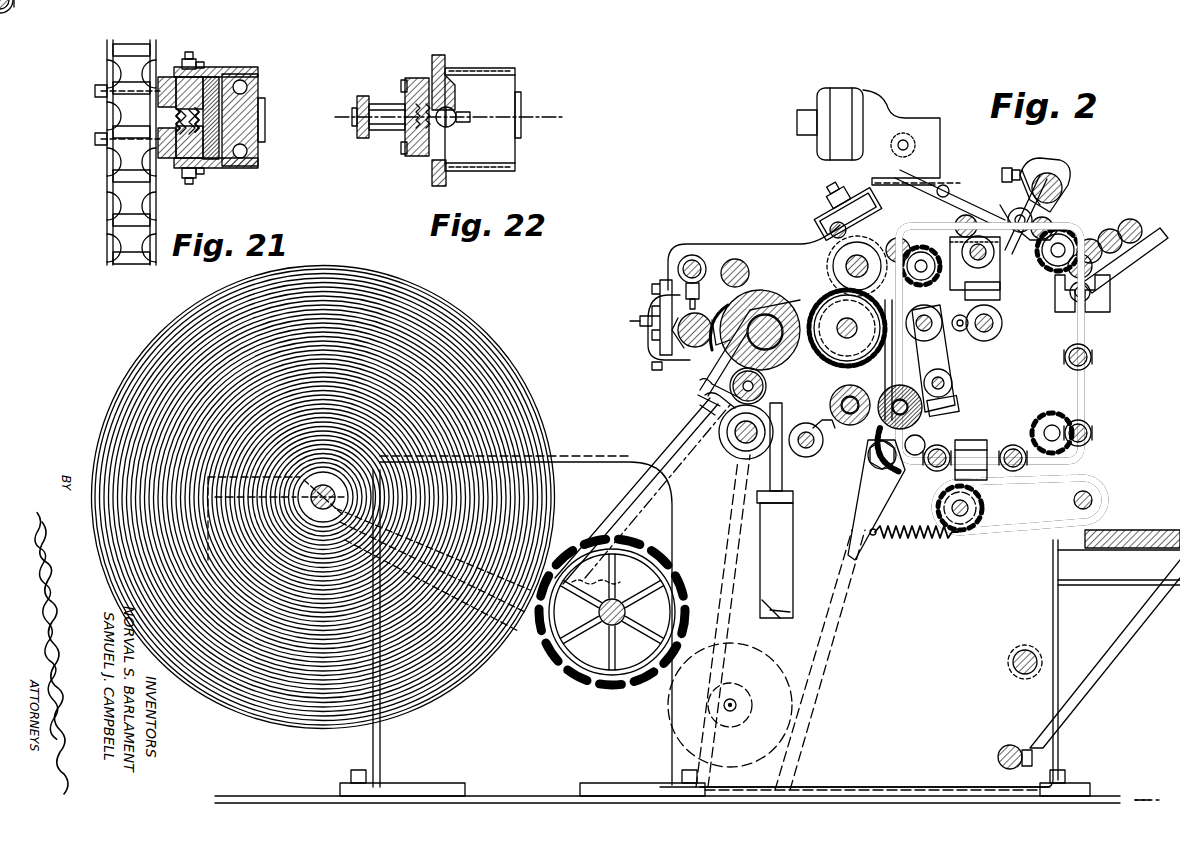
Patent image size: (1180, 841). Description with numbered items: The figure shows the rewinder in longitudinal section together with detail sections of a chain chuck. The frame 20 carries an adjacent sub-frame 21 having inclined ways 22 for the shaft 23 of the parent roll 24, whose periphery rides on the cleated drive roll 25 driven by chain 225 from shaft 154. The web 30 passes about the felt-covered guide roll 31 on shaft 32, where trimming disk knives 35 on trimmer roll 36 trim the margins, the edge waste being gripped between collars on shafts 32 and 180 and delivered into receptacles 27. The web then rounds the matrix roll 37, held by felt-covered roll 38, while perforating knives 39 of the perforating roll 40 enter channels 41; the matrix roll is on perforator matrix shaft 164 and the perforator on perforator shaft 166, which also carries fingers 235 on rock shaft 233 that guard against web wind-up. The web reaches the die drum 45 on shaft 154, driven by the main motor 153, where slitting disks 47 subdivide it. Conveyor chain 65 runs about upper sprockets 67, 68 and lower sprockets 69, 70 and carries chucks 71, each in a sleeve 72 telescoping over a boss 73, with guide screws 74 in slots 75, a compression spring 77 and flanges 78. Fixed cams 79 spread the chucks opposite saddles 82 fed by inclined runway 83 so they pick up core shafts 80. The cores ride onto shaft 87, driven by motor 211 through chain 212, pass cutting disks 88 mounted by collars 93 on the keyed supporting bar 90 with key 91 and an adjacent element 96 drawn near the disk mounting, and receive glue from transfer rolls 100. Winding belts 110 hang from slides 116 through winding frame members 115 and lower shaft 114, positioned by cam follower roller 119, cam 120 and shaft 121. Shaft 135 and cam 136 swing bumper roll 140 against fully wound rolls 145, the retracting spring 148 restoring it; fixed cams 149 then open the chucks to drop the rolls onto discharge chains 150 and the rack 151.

In FIG. 2, the frame 20 is at (1058, 646).
In FIG. 22, the sub-frame 21 is at (338, 119).
In FIG. 2, the sub-frame 21 is at (582, 462).
In FIG. 21, the inclined ways 22 is at (210, 52).
In FIG. 2, the inclined ways 22 is at (540, 545).
In FIG. 2, the shaft 23 is at (318, 484).
In FIG. 2, the parent roll 24 is at (494, 402).
In FIG. 2, the cleated drive roll 25 is at (686, 572).
In FIG. 2, the receptacles 27 is at (782, 410).
In FIG. 2, the web 30 is at (800, 302).
In FIG. 2, the felt-covered guide roll 31 is at (738, 378).
In FIG. 2, the shaft 32 is at (766, 390).
In FIG. 2, the trimming disk knives 35 is at (735, 445).
In FIG. 2, the trimmer roll 36 is at (746, 447).
In FIG. 2, the matrix roll 37 is at (758, 292).
In FIG. 2, the felt-covered roll 38 is at (735, 258).
In FIG. 2, the perforating knives 39 is at (660, 306).
In FIG. 2, the perforating roll 40 is at (672, 340).
In FIG. 2, the channels 41 is at (712, 348).
In FIG. 2, the die drum 45 is at (828, 324).
In FIG. 2, the slitting disks 47 is at (838, 272).
In FIG. 21, the chain 65 is at (126, 192).
In FIG. 22, the chain 65 is at (366, 128).
In FIG. 2, the chain 65 is at (1085, 398).
In FIG. 2, the upper sprocket 67 is at (1068, 228).
In FIG. 2, the upper sprocket 68 is at (926, 245).
In FIG. 2, the lower sprocket 69 is at (920, 468).
In FIG. 2, the lower sprocket 70 is at (1070, 430).
In FIG. 21, the chuck 71 is at (262, 102).
In FIG. 22, the chuck 71 is at (521, 102).
In FIG. 2, the chuck 71 is at (1095, 358).
In FIG. 21, the sleeve 72 is at (236, 170).
In FIG. 22, the sleeve 72 is at (506, 84).
In FIG. 21, the boss 73 is at (170, 160).
In FIG. 22, the boss 73 is at (424, 74).
In FIG. 21, the guide screws 74 is at (186, 62).
In FIG. 22, the guide screws 74 is at (452, 110).
In FIG. 21, the slots 75 is at (204, 70).
In FIG. 22, the slots 75 is at (462, 122).
In FIG. 21, the compression spring 77 is at (204, 78).
In FIG. 22, the compression spring 77 is at (424, 124).
In FIG. 22, the flanges 78 is at (442, 56).
In FIG. 2, the fixed cams 79 is at (1105, 304).
In FIG. 2, the core shaft 80 is at (1075, 230).
In FIG. 2, the saddles 82 is at (1103, 283).
In FIG. 2, the inclined runway 83 is at (1140, 240).
In FIG. 2, the shaft 87 is at (995, 296).
In FIG. 2, the cutting disks 88 is at (1002, 176).
In FIG. 2, the supporting bar 90 is at (1043, 170).
In FIG. 2, the key 91 is at (1060, 168).
In FIG. 2, the collar 93 is at (1072, 175).
In FIG. 2, the pin 96 is at (1024, 168).
In FIG. 2, the transfer rolls 100 is at (985, 300).
In FIG. 2, the winding belts 110 is at (950, 366).
In FIG. 2, the lower winding belt shaft 114 is at (950, 390).
In FIG. 2, the winding frame members 115 is at (952, 405).
In FIG. 2, the slides 116 is at (962, 320).
In FIG. 2, the cam follower roller 119 is at (965, 338).
In FIG. 2, the cam 120 is at (986, 334).
In FIG. 2, the shaft 121 is at (990, 330).
In FIG. 2, the shaft 135 is at (805, 410).
In FIG. 2, the cam 136 is at (808, 458).
In FIG. 2, the bumper roll 140 is at (852, 392).
In FIG. 2, the fully wound rolls 145 is at (870, 480).
In FIG. 2, the retracting spring 148 is at (903, 538).
In FIG. 2, the fixed cams 149 is at (972, 445).
In FIG. 2, the discharge conveyor chains 150 is at (1028, 478).
In FIG. 2, the rack 151 is at (1138, 530).
In FIG. 2, the main driving motor 153 is at (800, 715).
In FIG. 2, the shaft 154 is at (845, 340).
In FIG. 2, the perforator matrix shaft 164 is at (712, 362).
In FIG. 2, the perforator shaft 166 is at (660, 368).
In FIG. 2, the shaft 180 is at (735, 400).
In FIG. 2, the motor 211 is at (850, 108).
In FIG. 2, the chain 212 is at (950, 185).
In FIG. 2, the chain 225 is at (670, 478).
In FIG. 2, the rock shaft 233 is at (690, 258).
In FIG. 2, the fingers 235 is at (672, 268).